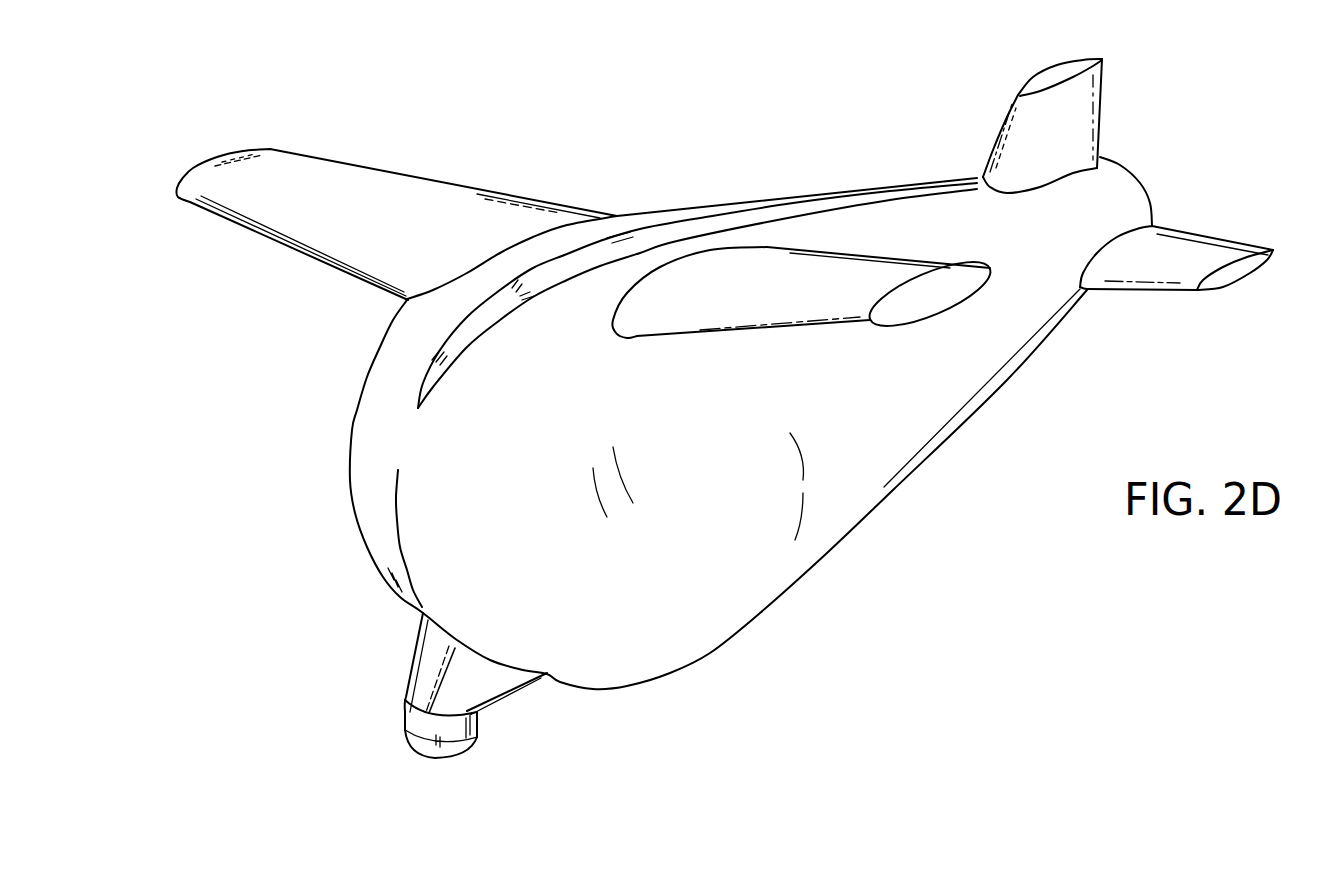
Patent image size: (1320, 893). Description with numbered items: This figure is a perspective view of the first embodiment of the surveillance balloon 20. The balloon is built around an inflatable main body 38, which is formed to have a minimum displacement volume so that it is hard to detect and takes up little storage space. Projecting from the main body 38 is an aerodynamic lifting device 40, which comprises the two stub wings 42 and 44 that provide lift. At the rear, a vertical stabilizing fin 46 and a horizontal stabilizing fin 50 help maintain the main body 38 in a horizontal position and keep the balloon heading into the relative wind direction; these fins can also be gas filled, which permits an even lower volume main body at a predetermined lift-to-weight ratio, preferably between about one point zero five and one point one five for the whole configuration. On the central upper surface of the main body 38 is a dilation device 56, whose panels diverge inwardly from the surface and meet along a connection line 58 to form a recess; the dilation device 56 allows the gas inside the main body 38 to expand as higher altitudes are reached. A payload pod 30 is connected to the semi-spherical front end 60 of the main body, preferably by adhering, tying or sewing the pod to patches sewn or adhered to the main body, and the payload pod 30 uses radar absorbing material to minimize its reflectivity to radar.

The surveillance balloon 20 is at (948, 442).
The payload pod 30 is at (406, 684).
The main body 38 is at (693, 465).
The aerodynamic lifting device 40 is at (520, 196).
The stub wing 42 is at (785, 297).
The stub wing 44 is at (303, 207).
The vertical stabilizing fin 46 is at (1070, 141).
The horizontal stabilizing fin 50 is at (1187, 253).
The dilation device 56 is at (468, 316).
The connection line 58 is at (551, 276).
The semi-spherical front end 60 is at (412, 520).